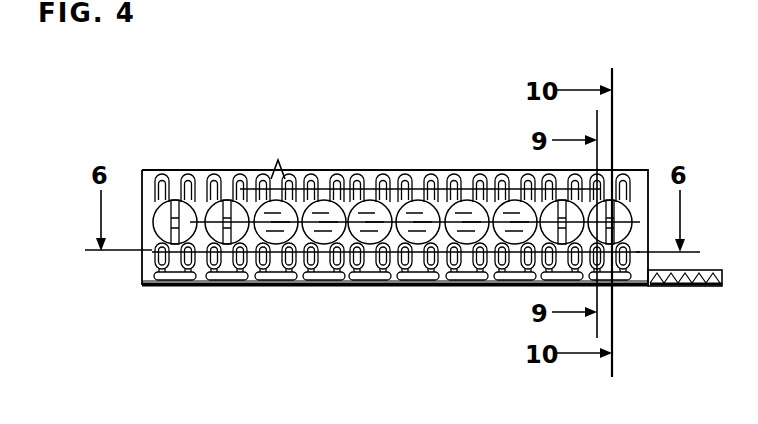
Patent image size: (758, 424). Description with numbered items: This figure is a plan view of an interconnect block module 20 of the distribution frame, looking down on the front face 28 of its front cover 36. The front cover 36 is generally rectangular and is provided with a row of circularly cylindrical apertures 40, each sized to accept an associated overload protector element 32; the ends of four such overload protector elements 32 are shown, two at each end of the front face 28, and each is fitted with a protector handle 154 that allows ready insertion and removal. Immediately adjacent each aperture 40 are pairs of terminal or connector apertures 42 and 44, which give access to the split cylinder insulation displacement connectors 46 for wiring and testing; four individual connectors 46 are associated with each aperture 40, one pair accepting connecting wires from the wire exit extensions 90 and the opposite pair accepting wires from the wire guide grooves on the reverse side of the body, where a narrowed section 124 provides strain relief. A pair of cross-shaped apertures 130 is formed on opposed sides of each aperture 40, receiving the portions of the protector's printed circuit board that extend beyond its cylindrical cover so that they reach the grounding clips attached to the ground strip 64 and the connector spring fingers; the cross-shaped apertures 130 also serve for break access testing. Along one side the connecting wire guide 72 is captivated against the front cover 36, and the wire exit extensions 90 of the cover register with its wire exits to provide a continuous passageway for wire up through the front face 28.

The interconnect block module 20 is at (386, 332).
The front face 28 is at (490, 297).
The overload protector element 32 is at (170, 221).
The front cover 36 is at (151, 280).
The circularly cylindrical aperture 40 is at (328, 206).
The terminal or connector aperture 42 is at (276, 166).
The terminal or connector aperture 44 is at (378, 258).
The connector 46 is at (288, 258).
The ground strip 64 is at (467, 205).
The connecting wire guide 72 is at (706, 291).
The wire exit extension 90 is at (218, 278).
The narrowed section 124 is at (432, 176).
The cross-shaped aperture 130 is at (181, 190).
The protector handle 154 is at (226, 200).